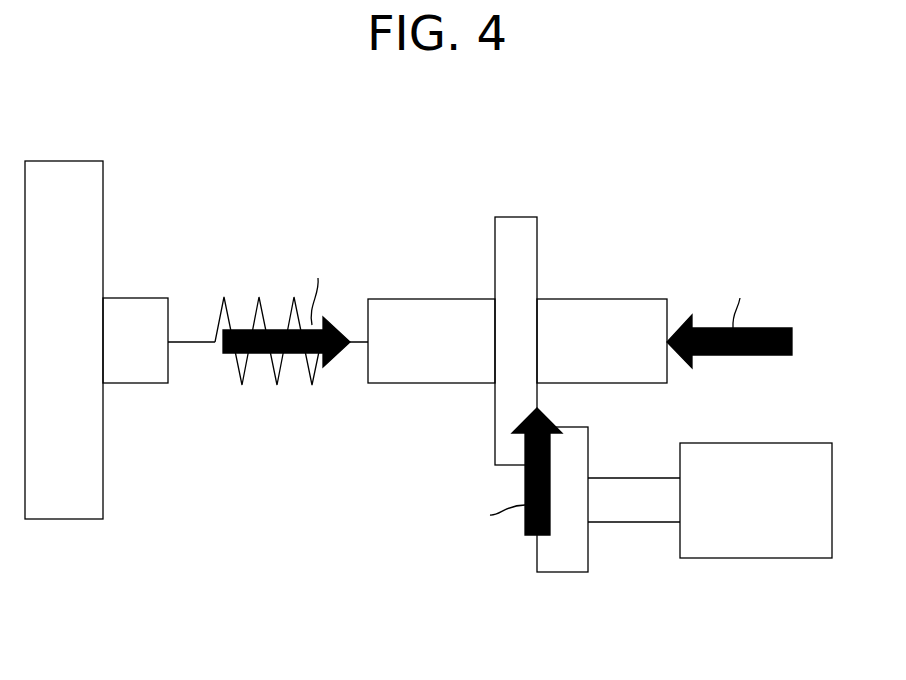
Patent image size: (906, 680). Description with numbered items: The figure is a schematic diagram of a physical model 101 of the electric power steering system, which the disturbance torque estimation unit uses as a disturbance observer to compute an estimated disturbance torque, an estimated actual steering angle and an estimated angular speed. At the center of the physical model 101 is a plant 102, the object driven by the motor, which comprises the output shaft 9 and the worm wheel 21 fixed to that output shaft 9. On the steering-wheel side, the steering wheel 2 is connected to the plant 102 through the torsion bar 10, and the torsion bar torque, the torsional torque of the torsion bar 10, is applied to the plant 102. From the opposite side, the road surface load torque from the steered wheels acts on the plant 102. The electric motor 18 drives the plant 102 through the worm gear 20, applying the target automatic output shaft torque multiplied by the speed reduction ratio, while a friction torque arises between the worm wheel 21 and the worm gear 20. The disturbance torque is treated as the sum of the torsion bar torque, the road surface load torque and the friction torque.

The steering wheel 2 is at (62, 519).
The torsion bar 10 is at (258, 308).
The worm wheel 21 is at (515, 217).
The output shaft 9 is at (627, 299).
The plant 102 is at (502, 158).
The worm gear 20 is at (563, 572).
The electric motor 18 is at (757, 558).
The physical model 101 is at (388, 664).